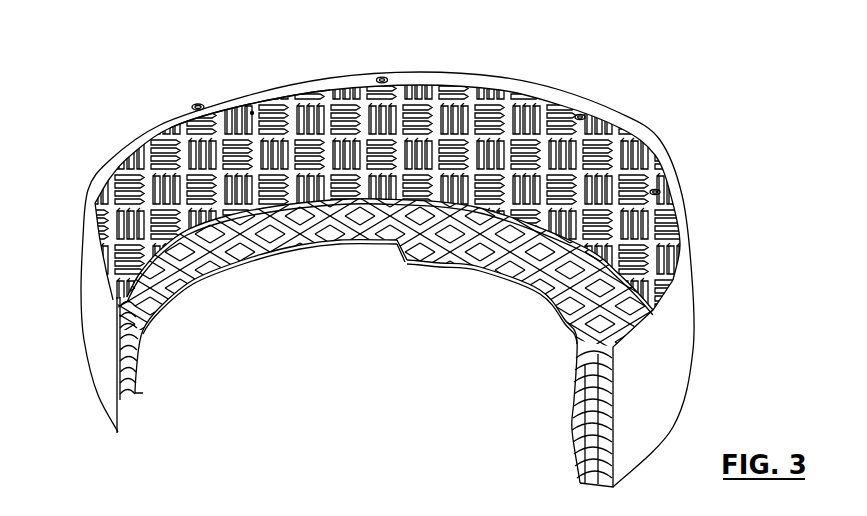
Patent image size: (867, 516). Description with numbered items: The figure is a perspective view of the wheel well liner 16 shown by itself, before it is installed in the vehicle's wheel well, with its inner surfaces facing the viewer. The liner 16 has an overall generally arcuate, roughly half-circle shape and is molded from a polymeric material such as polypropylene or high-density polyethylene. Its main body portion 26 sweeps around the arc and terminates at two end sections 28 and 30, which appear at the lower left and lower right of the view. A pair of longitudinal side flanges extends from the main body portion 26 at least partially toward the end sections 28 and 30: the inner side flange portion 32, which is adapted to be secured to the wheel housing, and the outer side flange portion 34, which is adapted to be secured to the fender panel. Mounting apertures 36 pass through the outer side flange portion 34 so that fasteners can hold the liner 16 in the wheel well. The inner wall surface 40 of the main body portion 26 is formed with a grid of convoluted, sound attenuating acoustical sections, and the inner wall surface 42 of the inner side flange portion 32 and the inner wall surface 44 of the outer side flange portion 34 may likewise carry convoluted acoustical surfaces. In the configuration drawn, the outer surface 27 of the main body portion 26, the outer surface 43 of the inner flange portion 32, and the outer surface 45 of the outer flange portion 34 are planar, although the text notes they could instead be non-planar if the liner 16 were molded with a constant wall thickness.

The liner 16 is at (395, 390).
The main body portion 26 is at (396, 256).
The outer surface of main body section 27 is at (675, 357).
The end section 28 is at (121, 343).
The end section 30 is at (574, 438).
The inner side flange portion 32 is at (423, 233).
The outer side flange portion 34 is at (128, 149).
The mounting apertures 36 is at (383, 78).
The inner wall surface 40 is at (490, 135).
The inner wall surface 42 is at (307, 236).
The outer surface of inner flange portion 43 is at (220, 268).
The inner wall surface 44 is at (252, 112).
The outer surface of outer flange portion 45 is at (465, 82).